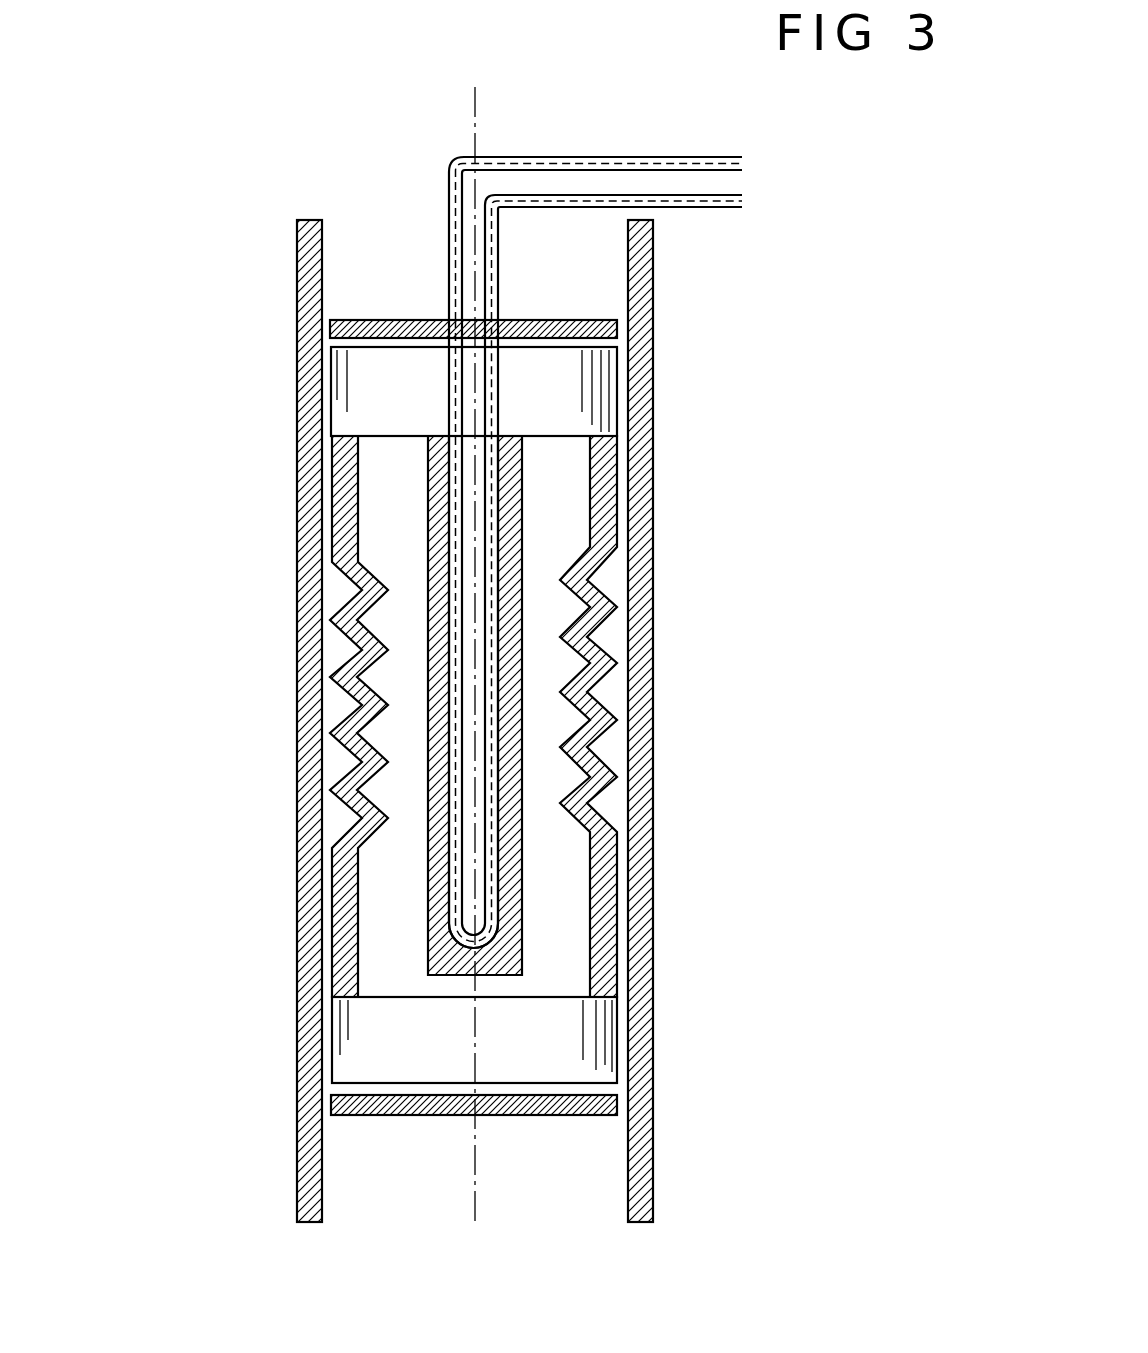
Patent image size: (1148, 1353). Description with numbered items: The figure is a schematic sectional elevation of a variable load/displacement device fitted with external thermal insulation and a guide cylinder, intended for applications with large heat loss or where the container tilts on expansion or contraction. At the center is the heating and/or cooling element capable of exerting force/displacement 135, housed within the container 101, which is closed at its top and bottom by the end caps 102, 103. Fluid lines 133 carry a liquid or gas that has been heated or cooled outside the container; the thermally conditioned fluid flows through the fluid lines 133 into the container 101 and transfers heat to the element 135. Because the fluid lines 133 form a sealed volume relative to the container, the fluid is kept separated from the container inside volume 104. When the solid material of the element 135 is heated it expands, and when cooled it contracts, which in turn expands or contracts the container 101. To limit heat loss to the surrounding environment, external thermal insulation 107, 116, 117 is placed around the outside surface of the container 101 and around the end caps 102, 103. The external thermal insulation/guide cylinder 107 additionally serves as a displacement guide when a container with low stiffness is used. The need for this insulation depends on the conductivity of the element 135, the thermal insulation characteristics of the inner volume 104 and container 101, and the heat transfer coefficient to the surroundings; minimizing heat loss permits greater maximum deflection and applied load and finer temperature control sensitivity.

The container 101 is at (603, 907).
The end cap 102 is at (558, 1030).
The end cap 103 is at (560, 390).
The container inside volume 104 is at (575, 520).
The external thermal insulation/guide cylinder 107 is at (298, 311).
The external thermal insulation 116 is at (443, 330).
The external thermal insulation 117 is at (405, 1117).
The fluid lines 133 is at (545, 198).
The heating and/or cooling element capable of exerting force/displacement 135 is at (507, 727).